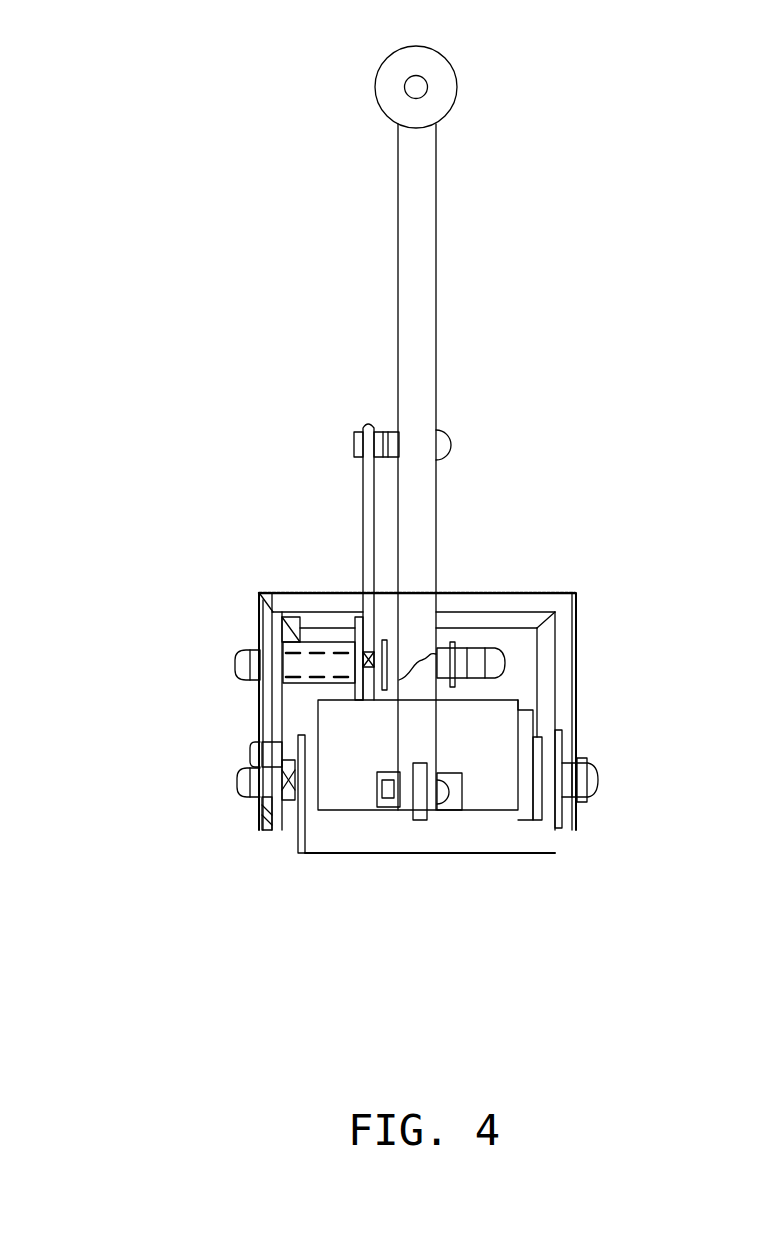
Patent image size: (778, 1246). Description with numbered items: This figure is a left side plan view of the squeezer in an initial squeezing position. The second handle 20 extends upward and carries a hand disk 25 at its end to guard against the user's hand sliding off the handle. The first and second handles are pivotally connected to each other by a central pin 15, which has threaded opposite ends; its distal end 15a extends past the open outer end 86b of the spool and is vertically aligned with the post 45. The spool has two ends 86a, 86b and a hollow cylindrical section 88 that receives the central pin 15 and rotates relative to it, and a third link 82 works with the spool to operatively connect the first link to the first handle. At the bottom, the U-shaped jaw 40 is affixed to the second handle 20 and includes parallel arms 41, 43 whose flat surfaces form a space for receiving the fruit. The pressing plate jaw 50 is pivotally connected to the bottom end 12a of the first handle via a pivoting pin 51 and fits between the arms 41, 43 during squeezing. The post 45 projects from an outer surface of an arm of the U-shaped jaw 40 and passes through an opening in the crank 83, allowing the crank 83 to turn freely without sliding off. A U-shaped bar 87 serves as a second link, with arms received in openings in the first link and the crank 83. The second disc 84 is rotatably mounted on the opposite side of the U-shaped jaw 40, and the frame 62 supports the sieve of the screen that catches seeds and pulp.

The hand disk 25 is at (457, 77).
The second handle 20 is at (450, 240).
The third link 82 is at (363, 483).
The frame 62 is at (576, 593).
The end of spool 86a is at (358, 613).
The open outer end of spool 86b is at (278, 650).
The hollow cylindrical section 88 is at (320, 643).
The central pin 15 is at (283, 653).
The distal end of central pin 15a is at (233, 660).
The pressing plate jaw 50 is at (478, 812).
The pivoting pin 51 is at (420, 812).
The bottom end of first handle 12a is at (407, 820).
The arm of U-shaped jaw 43 is at (538, 820).
The second disc 84 is at (557, 828).
The arm of U-shaped jaw 41 is at (298, 822).
The crank 83 is at (275, 827).
The U-shaped bar 87 is at (248, 752).
The post 45 is at (242, 797).
The U-shaped jaw 40 is at (505, 852).